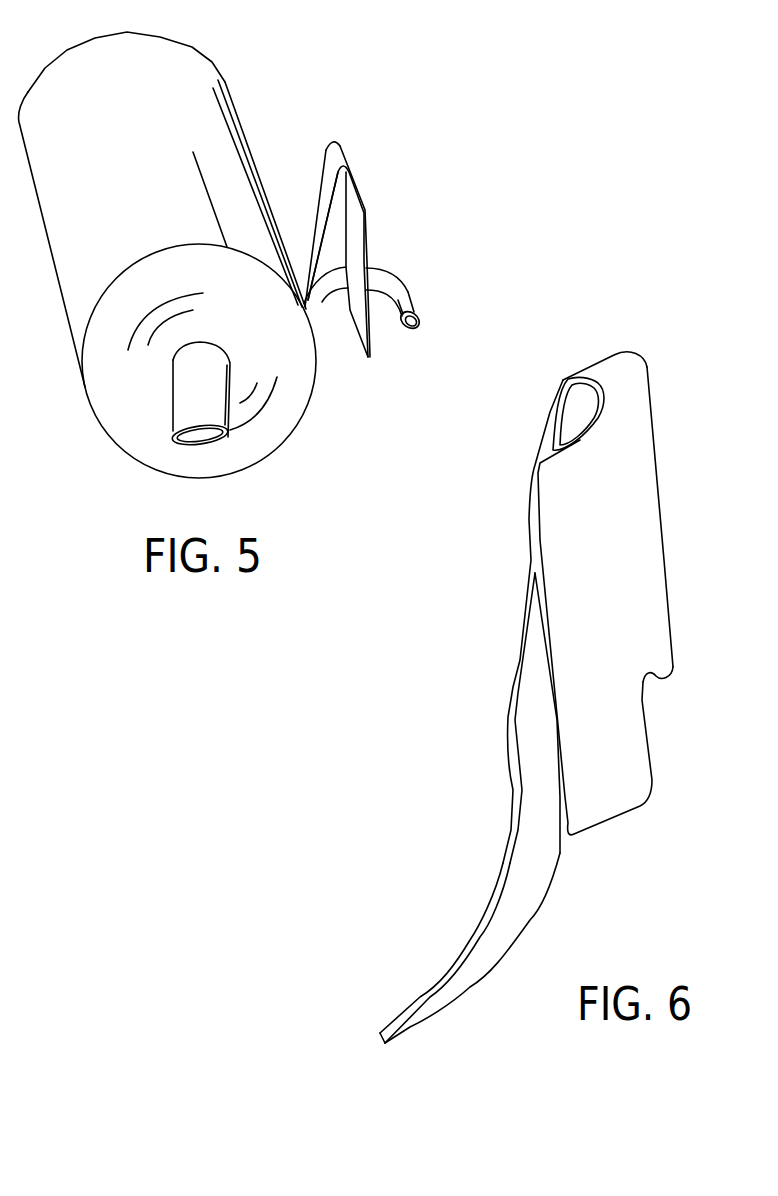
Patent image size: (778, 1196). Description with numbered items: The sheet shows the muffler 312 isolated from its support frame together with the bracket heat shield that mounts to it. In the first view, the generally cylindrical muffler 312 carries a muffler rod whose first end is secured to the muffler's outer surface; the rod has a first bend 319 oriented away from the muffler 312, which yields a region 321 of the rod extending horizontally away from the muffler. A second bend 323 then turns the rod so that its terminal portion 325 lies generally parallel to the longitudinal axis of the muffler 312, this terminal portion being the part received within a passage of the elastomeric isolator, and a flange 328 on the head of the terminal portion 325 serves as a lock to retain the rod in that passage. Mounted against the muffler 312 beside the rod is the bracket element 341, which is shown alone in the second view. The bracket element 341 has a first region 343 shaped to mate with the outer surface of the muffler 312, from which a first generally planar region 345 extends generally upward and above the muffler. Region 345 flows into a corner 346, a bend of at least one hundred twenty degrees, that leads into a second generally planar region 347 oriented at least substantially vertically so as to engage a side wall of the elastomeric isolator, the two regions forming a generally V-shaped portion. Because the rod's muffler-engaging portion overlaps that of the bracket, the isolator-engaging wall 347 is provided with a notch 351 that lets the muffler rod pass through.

In FIG. 5, the muffler 312 is at (287, 420).
In FIG. 5, the first bend 319 is at (323, 302).
In FIG. 5, the region 321 is at (382, 266).
In FIG. 5, the second bend 323 is at (402, 270).
In FIG. 5, the terminal portion 325 is at (413, 296).
In FIG. 5, the flange 328 is at (425, 325).
In FIG. 5, the bracket element 341 is at (350, 160).
In FIG. 6, the first region 343 is at (523, 908).
In FIG. 5, the first generally planar region 345 is at (320, 195).
In FIG. 6, the first generally planar region 345 is at (513, 690).
In FIG. 5, the corner 346 is at (338, 147).
In FIG. 6, the corner 346 is at (613, 362).
In FIG. 5, the second generally planar region 347 is at (368, 223).
In FIG. 6, the second generally planar region 347 is at (640, 497).
In FIG. 6, the notch 351 is at (657, 670).